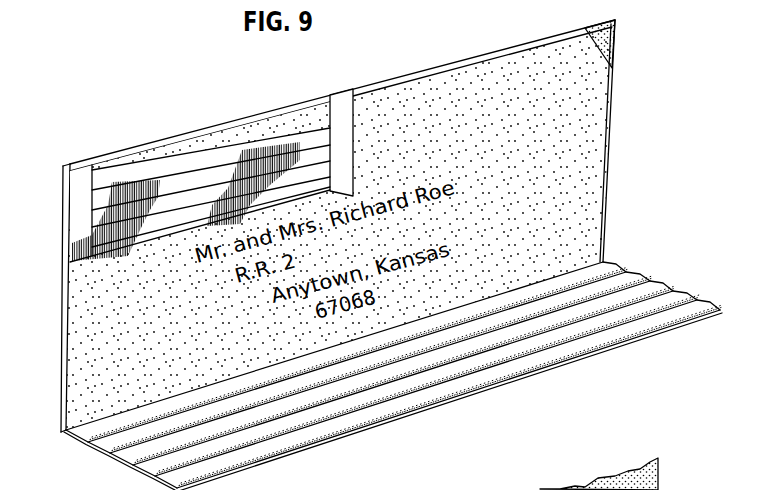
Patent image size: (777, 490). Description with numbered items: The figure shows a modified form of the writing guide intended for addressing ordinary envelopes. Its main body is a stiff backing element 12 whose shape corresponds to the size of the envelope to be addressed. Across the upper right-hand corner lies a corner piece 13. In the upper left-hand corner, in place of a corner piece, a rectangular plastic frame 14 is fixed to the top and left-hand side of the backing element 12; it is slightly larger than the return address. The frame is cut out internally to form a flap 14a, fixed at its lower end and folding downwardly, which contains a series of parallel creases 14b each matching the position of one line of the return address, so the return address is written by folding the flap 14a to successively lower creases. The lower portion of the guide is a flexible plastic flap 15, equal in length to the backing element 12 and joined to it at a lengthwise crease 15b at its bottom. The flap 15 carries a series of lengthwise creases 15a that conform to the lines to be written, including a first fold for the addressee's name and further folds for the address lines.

The backing element 12 is at (213, 126).
The corner piece 13 is at (613, 46).
The plastic frame 14 is at (188, 171).
The flap 14a is at (312, 138).
The parallel creases 14b is at (100, 210).
The plastic flap 15 is at (393, 365).
The lengthwise creases 15a is at (650, 282).
The lengthwise crease 15b is at (590, 258).